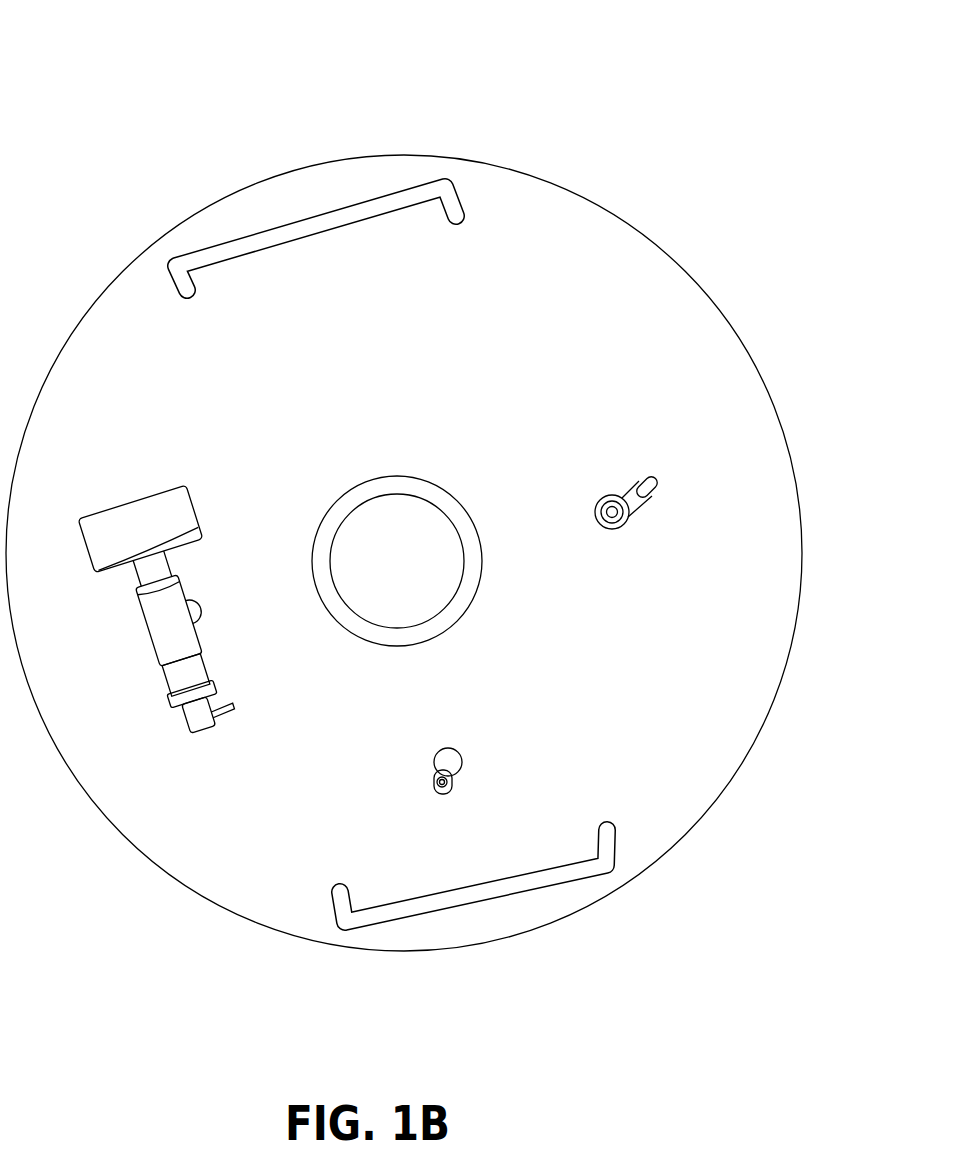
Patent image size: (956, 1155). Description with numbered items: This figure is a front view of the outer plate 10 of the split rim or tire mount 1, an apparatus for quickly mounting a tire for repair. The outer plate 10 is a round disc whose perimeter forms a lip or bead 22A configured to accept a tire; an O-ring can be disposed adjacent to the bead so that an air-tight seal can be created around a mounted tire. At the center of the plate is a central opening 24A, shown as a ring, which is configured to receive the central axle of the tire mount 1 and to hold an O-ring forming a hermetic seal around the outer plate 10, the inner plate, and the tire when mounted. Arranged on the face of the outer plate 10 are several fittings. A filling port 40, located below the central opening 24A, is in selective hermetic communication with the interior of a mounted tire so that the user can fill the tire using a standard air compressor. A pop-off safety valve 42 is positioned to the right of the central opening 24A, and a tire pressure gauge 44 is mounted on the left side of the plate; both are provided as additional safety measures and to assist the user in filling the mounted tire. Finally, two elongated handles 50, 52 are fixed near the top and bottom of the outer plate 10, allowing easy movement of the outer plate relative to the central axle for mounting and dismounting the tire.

The tire mount 1 is at (693, 117).
The outer plate 10 is at (665, 272).
The lip or bead 22A is at (540, 172).
The central opening 24A is at (398, 630).
The filling port 40 is at (452, 778).
The pop-off safety valve 42 is at (617, 485).
The tire pressure gauge 44 is at (185, 712).
The handle 50 is at (367, 200).
The handle 52 is at (521, 888).